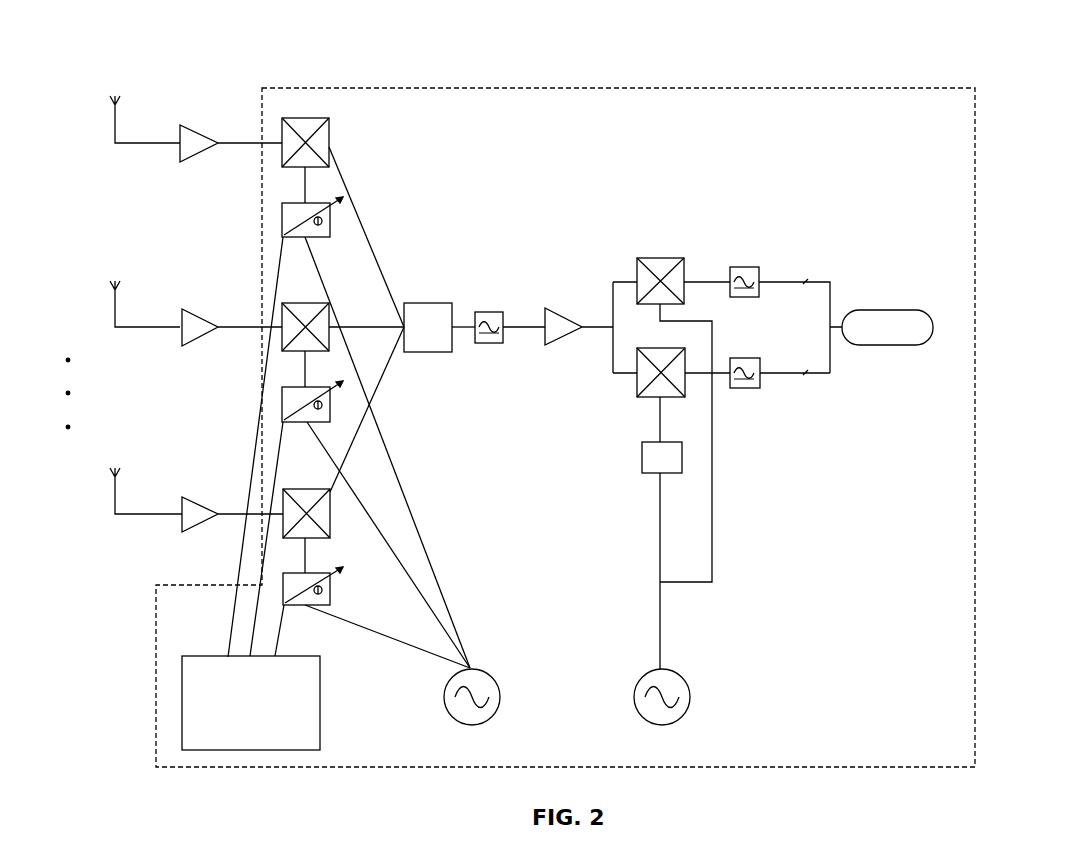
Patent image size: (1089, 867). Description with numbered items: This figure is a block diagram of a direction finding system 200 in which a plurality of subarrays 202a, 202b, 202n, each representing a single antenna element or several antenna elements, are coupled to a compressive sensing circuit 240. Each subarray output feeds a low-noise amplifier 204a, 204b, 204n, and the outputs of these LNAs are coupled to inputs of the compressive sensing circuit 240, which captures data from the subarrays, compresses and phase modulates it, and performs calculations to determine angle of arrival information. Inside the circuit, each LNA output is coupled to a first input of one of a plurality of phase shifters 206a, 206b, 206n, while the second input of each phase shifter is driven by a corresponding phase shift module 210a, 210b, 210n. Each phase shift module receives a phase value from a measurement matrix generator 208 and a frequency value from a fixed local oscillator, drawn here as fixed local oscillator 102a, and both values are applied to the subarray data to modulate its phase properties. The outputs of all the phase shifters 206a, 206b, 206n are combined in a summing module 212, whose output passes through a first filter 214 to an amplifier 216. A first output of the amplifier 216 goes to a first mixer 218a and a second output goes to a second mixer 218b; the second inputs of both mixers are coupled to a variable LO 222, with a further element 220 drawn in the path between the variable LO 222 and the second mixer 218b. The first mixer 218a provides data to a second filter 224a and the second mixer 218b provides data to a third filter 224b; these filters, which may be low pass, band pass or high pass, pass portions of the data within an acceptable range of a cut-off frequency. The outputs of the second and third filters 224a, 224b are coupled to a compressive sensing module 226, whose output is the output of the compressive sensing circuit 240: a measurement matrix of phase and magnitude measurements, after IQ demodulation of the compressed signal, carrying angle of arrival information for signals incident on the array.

The direction finding system 200 is at (220, 51).
The subarray 202a is at (111, 118).
The subarray 202b is at (111, 304).
The subarray 202n is at (112, 491).
The low-noise amplifier 204a is at (231, 130).
The low-noise amplifier 204b is at (232, 315).
The low-noise amplifier 204n is at (229, 500).
The phase shifter 206a is at (329, 118).
The phase shifter 206b is at (329, 303).
The phase shifter 206n is at (330, 517).
The phase shift module 210a is at (330, 218).
The phase shift module 210b is at (330, 405).
The phase shift module 210n is at (330, 588).
The measurement matrix generator 208 is at (203, 657).
The fixed local oscillator 102a is at (442, 709).
The summing module 212 is at (425, 298).
The first filter 214 is at (478, 308).
The amplifier 216 is at (551, 309).
The first mixer 218a is at (655, 258).
The second mixer 218b is at (632, 385).
The phase shifter (-j) 220 is at (640, 464).
The variable LO 222 is at (637, 680).
The second filter 224a is at (742, 266).
The third filter 224b is at (748, 388).
The compressive sensing module 226 is at (888, 310).
The compressive sensing circuit 240 is at (978, 125).